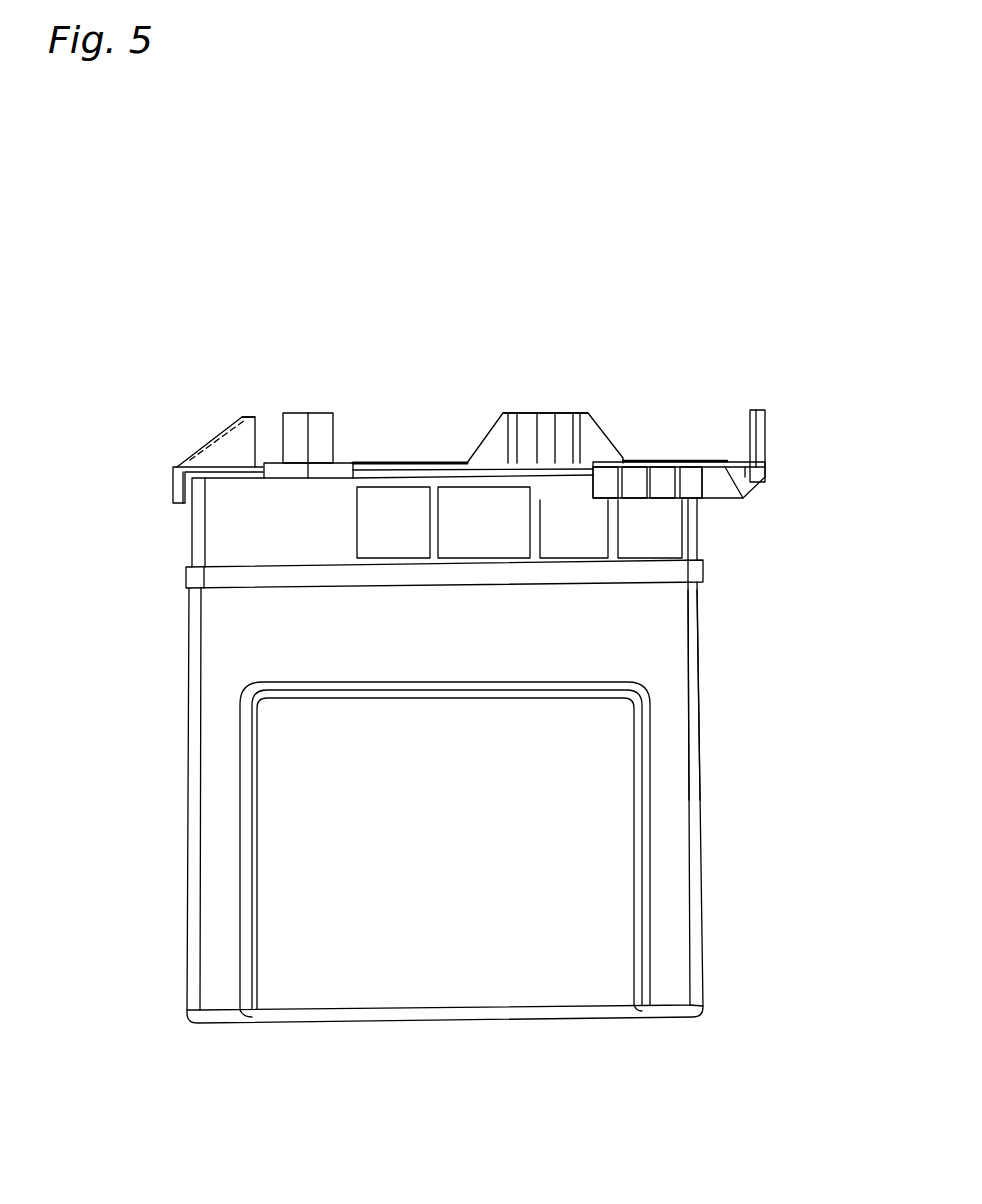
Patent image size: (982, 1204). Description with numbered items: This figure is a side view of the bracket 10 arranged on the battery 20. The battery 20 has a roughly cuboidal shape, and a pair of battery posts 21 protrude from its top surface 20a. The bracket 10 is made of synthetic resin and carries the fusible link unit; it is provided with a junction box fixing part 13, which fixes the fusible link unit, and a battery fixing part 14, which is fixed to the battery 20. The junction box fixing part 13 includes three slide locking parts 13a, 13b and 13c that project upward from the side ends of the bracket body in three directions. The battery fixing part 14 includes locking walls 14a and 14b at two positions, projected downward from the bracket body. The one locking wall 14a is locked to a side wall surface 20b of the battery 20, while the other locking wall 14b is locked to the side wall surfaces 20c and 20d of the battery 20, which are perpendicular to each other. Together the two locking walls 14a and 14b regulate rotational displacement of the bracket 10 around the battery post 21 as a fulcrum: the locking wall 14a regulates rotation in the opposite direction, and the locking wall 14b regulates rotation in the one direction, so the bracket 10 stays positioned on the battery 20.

The bracket 10 is at (512, 408).
The junction box fixing part 13 is at (218, 423).
The slide locking part 13a is at (255, 420).
The slide locking part 13b is at (535, 412).
The slide locking part 13c is at (762, 428).
The battery fixing part 14 is at (167, 462).
The locking wall 14a is at (185, 488).
The locking wall 14b is at (695, 485).
The battery 20 is at (188, 717).
The top surface 20a is at (410, 463).
The side wall surface 20b is at (193, 530).
The side wall surface 20c is at (578, 638).
The side wall surface 20d is at (697, 535).
The battery post 21 is at (323, 413).